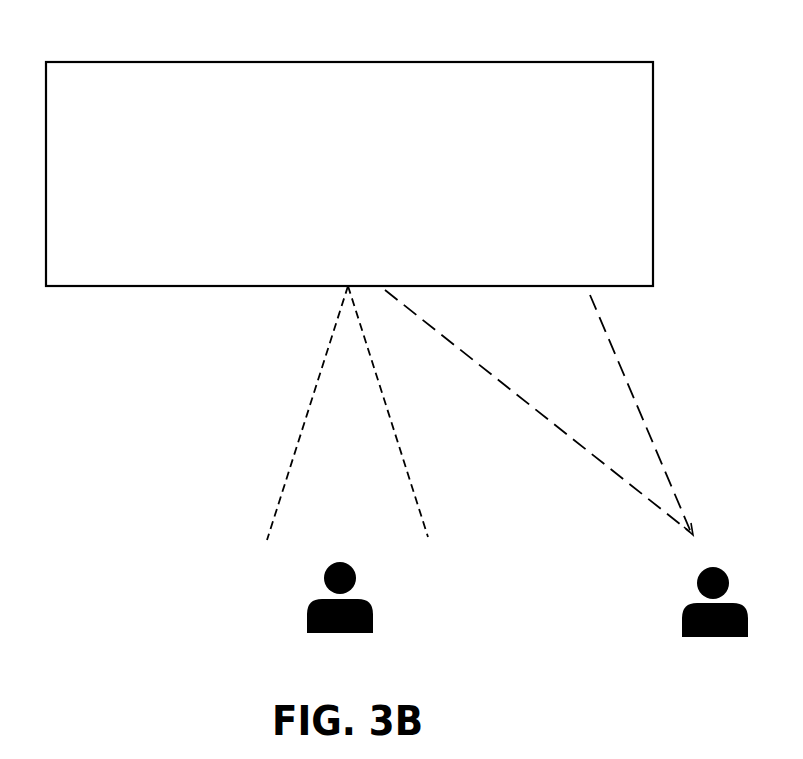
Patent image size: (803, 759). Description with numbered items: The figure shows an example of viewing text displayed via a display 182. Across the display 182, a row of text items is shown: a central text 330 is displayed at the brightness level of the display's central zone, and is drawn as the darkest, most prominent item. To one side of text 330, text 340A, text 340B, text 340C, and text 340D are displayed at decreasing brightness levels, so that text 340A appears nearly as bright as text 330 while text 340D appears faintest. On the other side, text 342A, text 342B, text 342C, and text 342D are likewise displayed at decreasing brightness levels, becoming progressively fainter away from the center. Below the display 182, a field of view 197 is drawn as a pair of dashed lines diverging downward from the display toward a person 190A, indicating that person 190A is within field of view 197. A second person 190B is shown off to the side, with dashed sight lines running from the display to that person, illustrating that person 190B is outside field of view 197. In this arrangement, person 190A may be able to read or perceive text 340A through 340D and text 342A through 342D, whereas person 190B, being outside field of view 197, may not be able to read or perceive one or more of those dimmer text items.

The display 182 is at (352, 62).
The text 330 is at (350, 237).
The text 340A is at (298, 243).
The text 340B is at (240, 247).
The text 340C is at (183, 247).
The text 340D is at (124, 240).
The text 342A is at (398, 237).
The text 342B is at (448, 243).
The text 342C is at (511, 243).
The text 342D is at (577, 243).
The field of view 197 is at (347, 415).
The person 190A is at (310, 607).
The person 190B is at (688, 608).